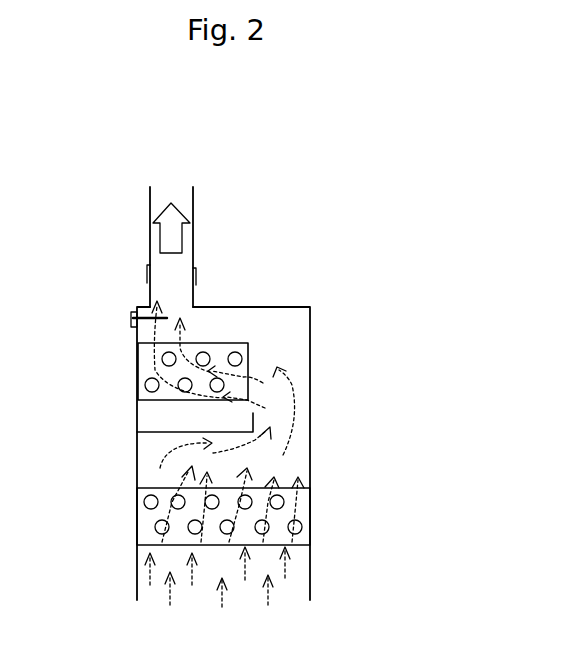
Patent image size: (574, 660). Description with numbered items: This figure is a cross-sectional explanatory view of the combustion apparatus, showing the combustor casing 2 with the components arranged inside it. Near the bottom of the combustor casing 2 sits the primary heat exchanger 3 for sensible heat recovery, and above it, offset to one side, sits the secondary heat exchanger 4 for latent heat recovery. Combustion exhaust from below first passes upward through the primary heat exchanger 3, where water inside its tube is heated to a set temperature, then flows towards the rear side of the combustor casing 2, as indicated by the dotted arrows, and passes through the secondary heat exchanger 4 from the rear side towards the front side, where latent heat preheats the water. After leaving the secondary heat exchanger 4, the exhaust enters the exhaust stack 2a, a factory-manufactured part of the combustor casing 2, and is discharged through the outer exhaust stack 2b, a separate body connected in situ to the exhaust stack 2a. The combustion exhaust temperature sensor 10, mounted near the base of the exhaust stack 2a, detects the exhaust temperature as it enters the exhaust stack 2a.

The combustor casing 2 is at (137, 460).
The exhaust stack 2a is at (196, 294).
The outer exhaust stack 2b is at (149, 218).
The combustion exhaust temperature sensor 10 is at (150, 320).
The secondary heat exchanger 4 is at (161, 401).
The primary heat exchanger 3 is at (298, 543).